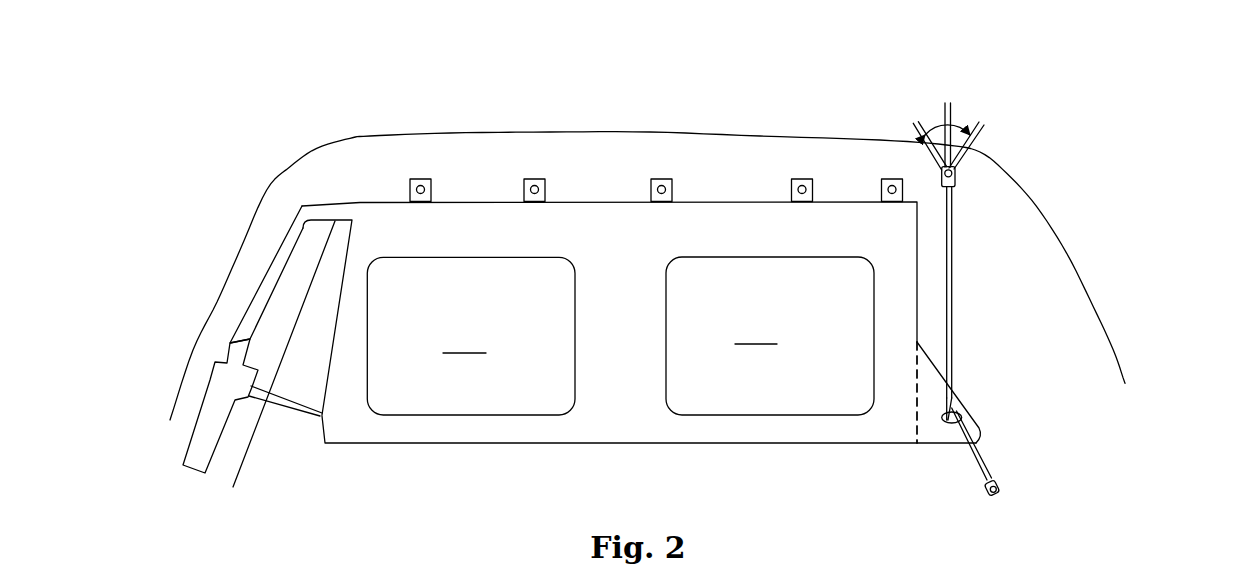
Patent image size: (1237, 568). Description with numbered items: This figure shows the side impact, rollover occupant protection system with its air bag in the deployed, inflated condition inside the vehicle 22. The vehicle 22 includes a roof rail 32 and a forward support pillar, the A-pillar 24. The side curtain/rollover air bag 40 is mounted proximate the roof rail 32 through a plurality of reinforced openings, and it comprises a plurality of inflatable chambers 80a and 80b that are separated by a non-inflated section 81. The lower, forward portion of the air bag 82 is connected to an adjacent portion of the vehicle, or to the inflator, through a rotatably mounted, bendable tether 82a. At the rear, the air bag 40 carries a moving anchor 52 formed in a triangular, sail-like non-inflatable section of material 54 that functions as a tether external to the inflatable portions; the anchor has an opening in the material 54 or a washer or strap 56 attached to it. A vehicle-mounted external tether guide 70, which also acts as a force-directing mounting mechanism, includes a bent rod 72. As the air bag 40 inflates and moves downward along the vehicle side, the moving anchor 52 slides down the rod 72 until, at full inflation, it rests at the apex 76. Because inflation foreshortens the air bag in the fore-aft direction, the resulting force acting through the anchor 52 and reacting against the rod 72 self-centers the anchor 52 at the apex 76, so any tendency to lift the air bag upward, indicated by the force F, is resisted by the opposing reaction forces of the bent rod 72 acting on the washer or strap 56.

The vehicle 22 is at (285, 160).
The roof rail 32 is at (373, 177).
The A-pillar 24 is at (241, 290).
The side curtain/rollover air bag 40 is at (733, 408).
The non-inflated section 81 is at (623, 342).
The inflatable chamber 80a is at (471, 336).
The inflatable chamber 80b is at (770, 336).
The lower, forward portion of the air bag 82 is at (345, 428).
The rotatably mounted tether 82a is at (295, 413).
The external tether guide 70 is at (956, 322).
The apex 76 is at (952, 398).
The washer or strap 56 is at (962, 418).
The moving anchor 52 is at (970, 432).
The non-inflatable section of material 54 is at (930, 425).
The bent rod 72 is at (980, 477).
The force F is at (848, 463).